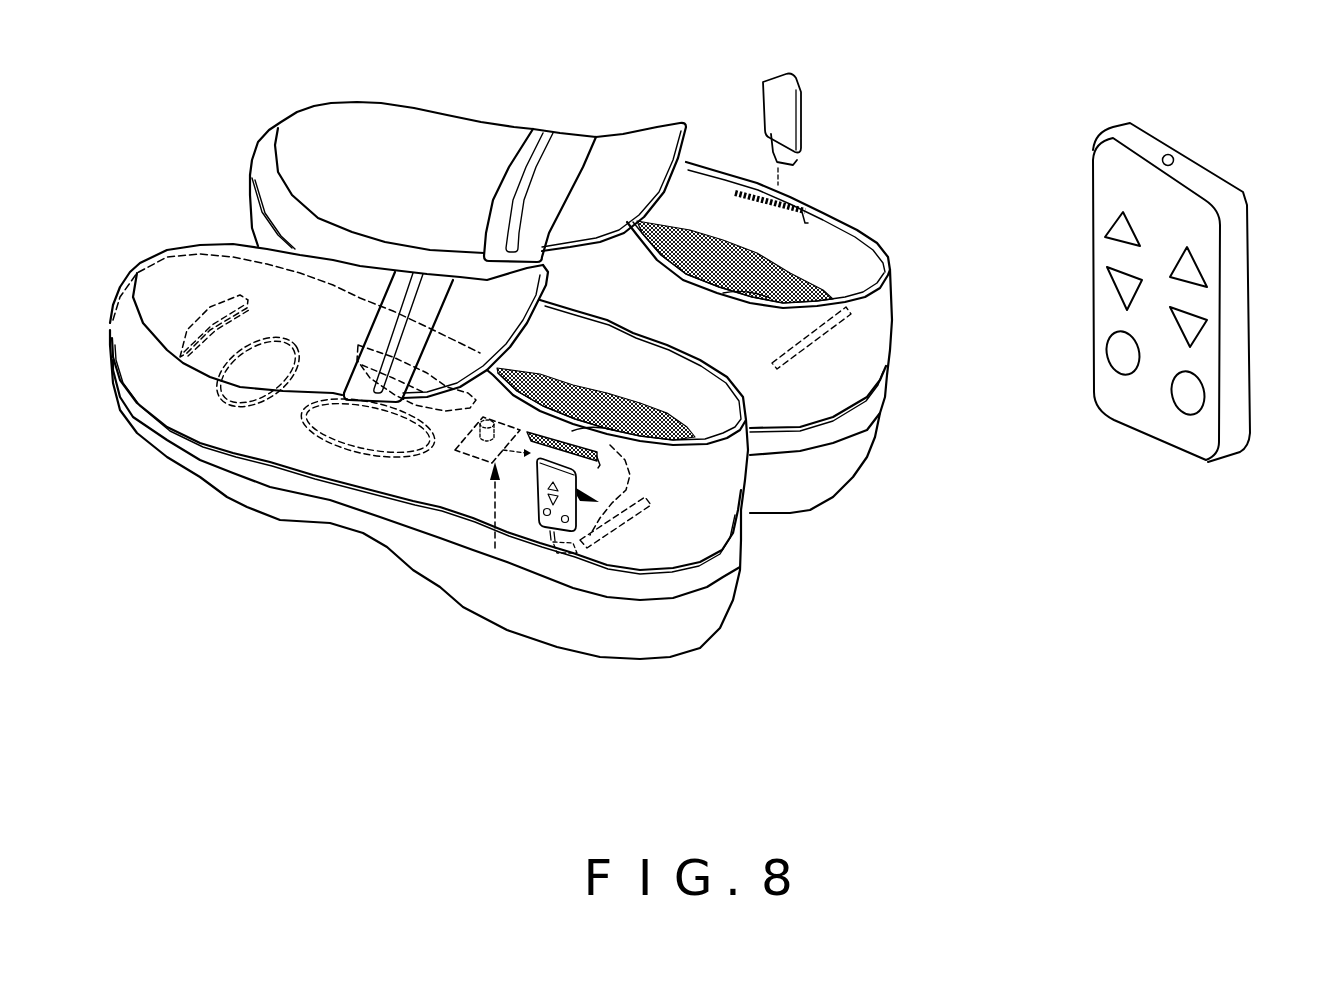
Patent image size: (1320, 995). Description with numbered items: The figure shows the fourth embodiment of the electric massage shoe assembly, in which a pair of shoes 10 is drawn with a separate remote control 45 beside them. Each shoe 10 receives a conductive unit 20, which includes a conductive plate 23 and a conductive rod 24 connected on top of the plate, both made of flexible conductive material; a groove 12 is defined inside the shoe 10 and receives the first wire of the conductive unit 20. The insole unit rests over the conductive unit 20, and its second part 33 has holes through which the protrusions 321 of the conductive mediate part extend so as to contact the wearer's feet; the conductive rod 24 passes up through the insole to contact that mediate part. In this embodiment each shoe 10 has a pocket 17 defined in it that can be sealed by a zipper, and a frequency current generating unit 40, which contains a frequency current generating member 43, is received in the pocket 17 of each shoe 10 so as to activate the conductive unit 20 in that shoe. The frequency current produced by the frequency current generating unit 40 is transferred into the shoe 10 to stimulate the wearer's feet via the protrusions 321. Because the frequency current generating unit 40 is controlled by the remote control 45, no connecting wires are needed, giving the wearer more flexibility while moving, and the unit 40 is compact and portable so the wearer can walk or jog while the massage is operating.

The shoe 10 is at (903, 143).
The groove 12 is at (577, 545).
The pocket 17 is at (600, 463).
The conductive unit 20 is at (495, 550).
The conductive plate 23 is at (470, 440).
The conductive rod 24 is at (430, 460).
The second part 33 is at (293, 450).
The frequency current generating unit 40 is at (813, 87).
The frequency current generating member 43 is at (584, 500).
The remote control 45 is at (1228, 166).
The protrusions 321 is at (540, 430).